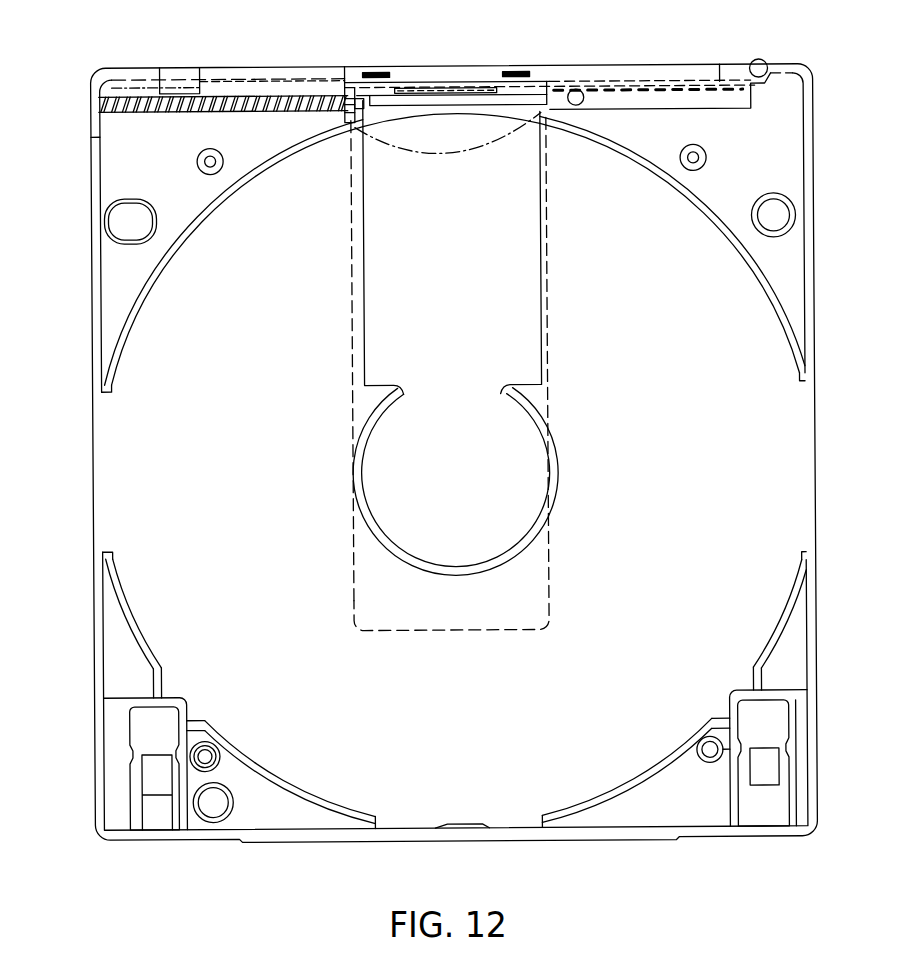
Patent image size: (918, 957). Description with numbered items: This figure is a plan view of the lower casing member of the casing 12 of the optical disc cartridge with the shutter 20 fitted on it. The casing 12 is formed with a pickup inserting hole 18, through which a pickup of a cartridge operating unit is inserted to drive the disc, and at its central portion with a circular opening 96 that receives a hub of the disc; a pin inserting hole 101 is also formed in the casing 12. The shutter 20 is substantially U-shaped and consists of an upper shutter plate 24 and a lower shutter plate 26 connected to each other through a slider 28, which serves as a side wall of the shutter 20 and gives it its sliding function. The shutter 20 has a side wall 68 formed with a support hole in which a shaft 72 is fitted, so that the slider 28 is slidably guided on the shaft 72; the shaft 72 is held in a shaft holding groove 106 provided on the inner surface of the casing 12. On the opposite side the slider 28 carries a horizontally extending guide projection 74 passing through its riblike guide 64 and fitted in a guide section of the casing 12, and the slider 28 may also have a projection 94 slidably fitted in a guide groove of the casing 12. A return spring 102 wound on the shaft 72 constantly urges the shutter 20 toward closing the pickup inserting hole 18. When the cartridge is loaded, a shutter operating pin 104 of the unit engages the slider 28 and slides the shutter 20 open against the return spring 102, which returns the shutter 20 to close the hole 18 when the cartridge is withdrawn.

The casing 12 is at (92, 323).
The pickup inserting hole 18 is at (541, 267).
The shutter 20 is at (408, 633).
The upper shutter plate 24 is at (491, 137).
The lower shutter plate 26 is at (352, 532).
The slider 28 is at (179, 64).
The riblike guide 64 is at (719, 93).
The side wall 68 is at (345, 88).
The shaft 72 is at (261, 111).
The guide projection 74 is at (705, 83).
The projection 94 is at (454, 96).
The circular opening 96 is at (539, 518).
The pin inserting hole 101 is at (121, 218).
The return spring 102 is at (247, 90).
The shutter operating pin 104 is at (765, 60).
The shaft holding groove 106 is at (357, 116).